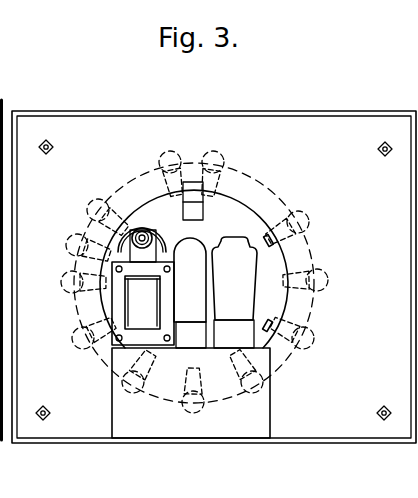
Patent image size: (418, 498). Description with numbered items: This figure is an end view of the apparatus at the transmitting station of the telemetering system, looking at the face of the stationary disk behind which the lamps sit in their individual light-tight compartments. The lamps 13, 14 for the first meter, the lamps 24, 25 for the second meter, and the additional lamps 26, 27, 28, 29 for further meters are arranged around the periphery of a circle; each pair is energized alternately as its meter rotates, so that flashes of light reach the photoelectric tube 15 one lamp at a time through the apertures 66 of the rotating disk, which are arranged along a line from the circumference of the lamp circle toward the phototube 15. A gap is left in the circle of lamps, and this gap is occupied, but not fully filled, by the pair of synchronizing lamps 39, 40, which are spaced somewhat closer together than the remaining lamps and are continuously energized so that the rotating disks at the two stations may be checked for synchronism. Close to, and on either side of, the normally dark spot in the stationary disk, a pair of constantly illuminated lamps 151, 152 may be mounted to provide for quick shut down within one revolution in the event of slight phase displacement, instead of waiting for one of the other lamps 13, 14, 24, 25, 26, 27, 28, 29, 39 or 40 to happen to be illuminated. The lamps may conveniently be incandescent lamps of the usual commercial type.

The lamp 13 is at (298, 227).
The lamp 14 is at (300, 336).
The photoelectric device or tube 15 is at (190, 248).
The lamp 24 is at (315, 280).
The lamp 25 is at (246, 379).
The lamp 26 is at (193, 399).
The lamp 27 is at (94, 344).
The lamp 28 is at (137, 379).
The lamp 29 is at (72, 282).
The synchronizing lamp 39 is at (170, 166).
The synchronizing lamp 40 is at (213, 166).
The apertures 66 is at (184, 205).
The constantly illuminated lamp 151 is at (77, 247).
The constantly illuminated lamp 152 is at (93, 217).